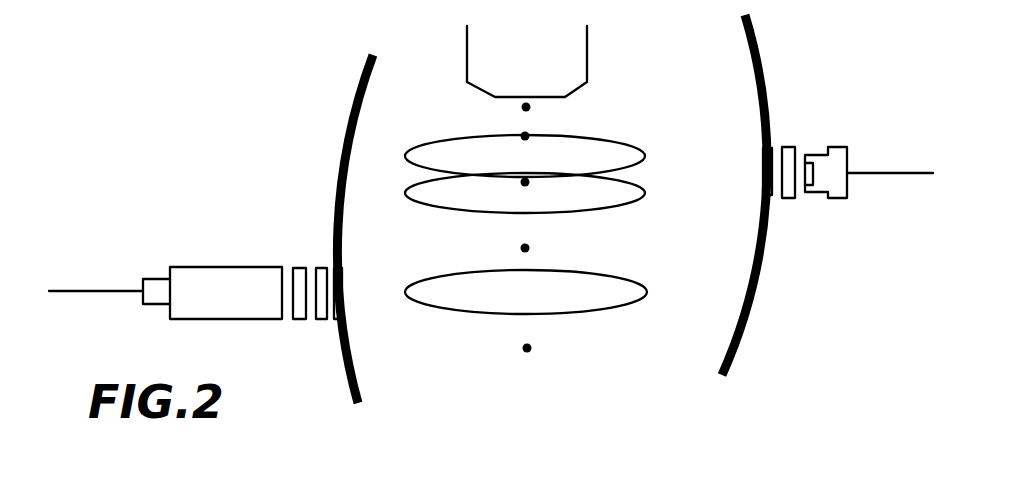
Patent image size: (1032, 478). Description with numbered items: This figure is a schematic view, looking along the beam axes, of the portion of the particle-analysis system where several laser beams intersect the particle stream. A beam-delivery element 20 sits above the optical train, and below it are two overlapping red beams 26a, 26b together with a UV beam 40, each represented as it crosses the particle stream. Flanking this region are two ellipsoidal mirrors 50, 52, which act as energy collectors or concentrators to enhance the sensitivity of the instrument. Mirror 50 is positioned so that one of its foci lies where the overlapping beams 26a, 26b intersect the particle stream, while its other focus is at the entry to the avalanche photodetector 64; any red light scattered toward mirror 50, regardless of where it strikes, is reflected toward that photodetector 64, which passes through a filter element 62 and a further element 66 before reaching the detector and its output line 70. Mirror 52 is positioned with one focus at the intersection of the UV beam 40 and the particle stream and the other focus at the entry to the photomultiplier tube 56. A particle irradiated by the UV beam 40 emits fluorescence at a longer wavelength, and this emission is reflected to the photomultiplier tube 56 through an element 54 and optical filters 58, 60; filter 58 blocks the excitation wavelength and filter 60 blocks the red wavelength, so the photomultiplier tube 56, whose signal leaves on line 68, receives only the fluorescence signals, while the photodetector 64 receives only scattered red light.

The light source 20 is at (587, 60).
The overlapping beam 26a is at (608, 142).
The overlapping beam 26b is at (617, 208).
The UV beam 40 is at (595, 312).
The ellipsoidal mirror 50 is at (338, 147).
The ellipsoidal mirror 52 is at (765, 62).
The filter 54 is at (338, 305).
The photomultiplier tube 56 is at (210, 267).
The optical filter 58 is at (323, 316).
The optical filter 60 is at (302, 268).
The opening 62 is at (763, 175).
The avalanche photodetector 64 is at (837, 147).
The filter 66 is at (788, 198).
The output line 68 is at (87, 291).
The output line 70 is at (888, 173).